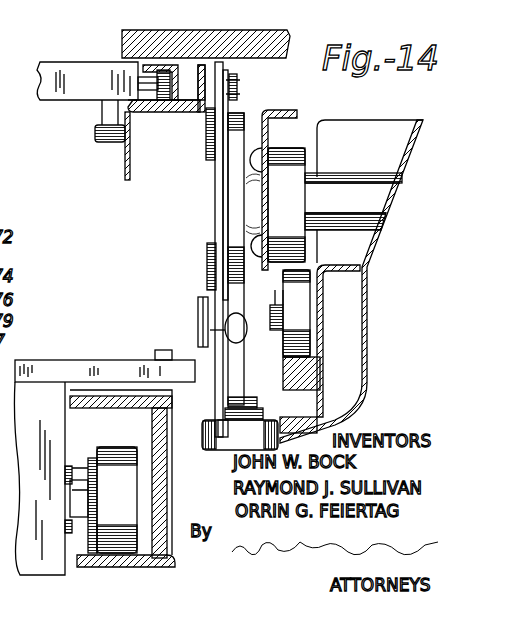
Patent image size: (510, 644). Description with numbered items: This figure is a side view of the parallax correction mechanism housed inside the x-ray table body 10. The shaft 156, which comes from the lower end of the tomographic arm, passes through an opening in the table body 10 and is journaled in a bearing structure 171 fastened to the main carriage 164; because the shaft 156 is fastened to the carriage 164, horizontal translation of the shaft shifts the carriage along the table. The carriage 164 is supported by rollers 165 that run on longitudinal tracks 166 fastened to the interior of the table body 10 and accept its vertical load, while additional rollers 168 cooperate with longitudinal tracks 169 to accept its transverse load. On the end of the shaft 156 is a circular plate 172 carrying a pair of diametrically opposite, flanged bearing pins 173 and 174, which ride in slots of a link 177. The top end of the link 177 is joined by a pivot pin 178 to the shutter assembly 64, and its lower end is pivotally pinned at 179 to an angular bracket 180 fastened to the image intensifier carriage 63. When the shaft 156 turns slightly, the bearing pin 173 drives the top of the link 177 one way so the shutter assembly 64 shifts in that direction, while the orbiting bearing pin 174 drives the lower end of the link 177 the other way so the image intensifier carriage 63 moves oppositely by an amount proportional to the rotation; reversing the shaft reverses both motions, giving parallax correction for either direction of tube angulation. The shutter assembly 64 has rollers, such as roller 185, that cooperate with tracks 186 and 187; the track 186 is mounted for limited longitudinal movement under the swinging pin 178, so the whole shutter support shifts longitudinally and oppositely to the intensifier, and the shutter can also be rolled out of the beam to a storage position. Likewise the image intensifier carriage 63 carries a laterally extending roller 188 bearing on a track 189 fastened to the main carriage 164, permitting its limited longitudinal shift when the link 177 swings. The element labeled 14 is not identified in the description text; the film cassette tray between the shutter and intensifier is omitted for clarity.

The table body 10 is at (390, 151).
The frame bar 14 is at (256, 37).
The image intensifier carriage 63 is at (40, 372).
The shutter assembly 64 is at (42, 70).
The shaft 156 is at (370, 191).
The carriage 164 is at (206, 437).
The rollers 165 is at (297, 297).
The longitudinal tracks 166 is at (300, 372).
The rollers 168 is at (293, 425).
The longitudinal tracks 169 is at (330, 422).
The bearing structure 171 is at (291, 155).
The circular plate 172 is at (236, 218).
The bearing pin 173 is at (212, 132).
The bearing pin 174 is at (208, 250).
The link 177 is at (217, 186).
The pivot pin 178 is at (240, 83).
The pivot pin 179 is at (226, 338).
The angular bracket 180 is at (199, 305).
The roller 185 is at (95, 133).
The track 186 is at (182, 93).
The track 187 is at (126, 152).
The roller 188 is at (104, 554).
The track 189 is at (136, 562).